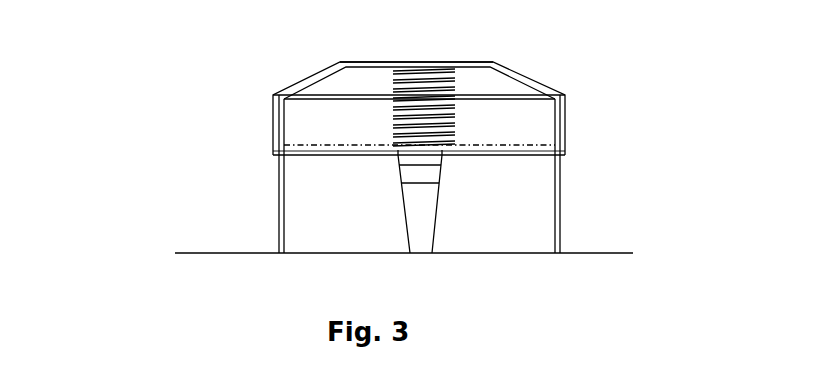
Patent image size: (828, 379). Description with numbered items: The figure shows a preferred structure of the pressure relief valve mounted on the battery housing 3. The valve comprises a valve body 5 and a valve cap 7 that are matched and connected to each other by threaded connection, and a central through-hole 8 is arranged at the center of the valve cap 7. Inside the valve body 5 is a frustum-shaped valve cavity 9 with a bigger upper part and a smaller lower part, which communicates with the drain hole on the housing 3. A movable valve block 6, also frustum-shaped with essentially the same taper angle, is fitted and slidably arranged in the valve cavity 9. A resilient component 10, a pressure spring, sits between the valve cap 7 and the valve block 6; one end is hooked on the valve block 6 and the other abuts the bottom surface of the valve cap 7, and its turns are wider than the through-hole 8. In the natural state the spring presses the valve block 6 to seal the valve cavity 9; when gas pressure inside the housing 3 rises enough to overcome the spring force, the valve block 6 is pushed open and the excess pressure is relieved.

The housing 3 is at (366, 224).
The valve body 5 is at (373, 174).
The valve block 6 is at (475, 236).
The valve cap 7 is at (379, 89).
The through-hole 8 is at (440, 34).
The valve cavity 9 is at (368, 220).
The resilient component 10 is at (363, 84).